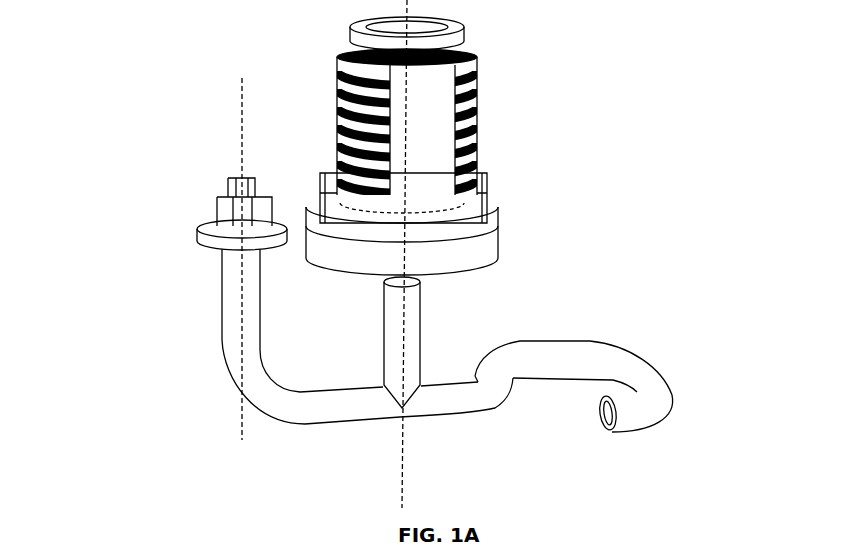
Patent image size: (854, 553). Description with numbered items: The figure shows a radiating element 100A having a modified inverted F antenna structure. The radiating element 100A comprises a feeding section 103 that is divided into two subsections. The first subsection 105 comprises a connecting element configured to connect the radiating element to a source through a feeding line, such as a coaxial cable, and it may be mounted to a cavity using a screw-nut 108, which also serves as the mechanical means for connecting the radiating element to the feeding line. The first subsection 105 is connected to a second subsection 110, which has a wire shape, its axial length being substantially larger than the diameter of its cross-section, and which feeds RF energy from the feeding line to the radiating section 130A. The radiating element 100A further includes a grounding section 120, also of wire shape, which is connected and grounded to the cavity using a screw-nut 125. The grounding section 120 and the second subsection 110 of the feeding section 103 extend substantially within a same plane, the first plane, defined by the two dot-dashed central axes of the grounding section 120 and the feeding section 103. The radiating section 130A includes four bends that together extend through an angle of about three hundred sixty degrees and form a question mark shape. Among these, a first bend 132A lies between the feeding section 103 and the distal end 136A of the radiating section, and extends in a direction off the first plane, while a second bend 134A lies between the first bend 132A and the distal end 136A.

The radiating element 100A is at (288, 69).
The feeding section 103 is at (653, 193).
The first subsection 105 is at (476, 138).
The screw-nut 108 is at (487, 200).
The second subsection 110 is at (420, 341).
The grounding section 120 is at (222, 330).
The screw-nut 125 is at (215, 213).
The radiating section 130A is at (546, 423).
The first bend 132A is at (517, 400).
The second bend 134A is at (548, 340).
The distal end 136A is at (610, 432).